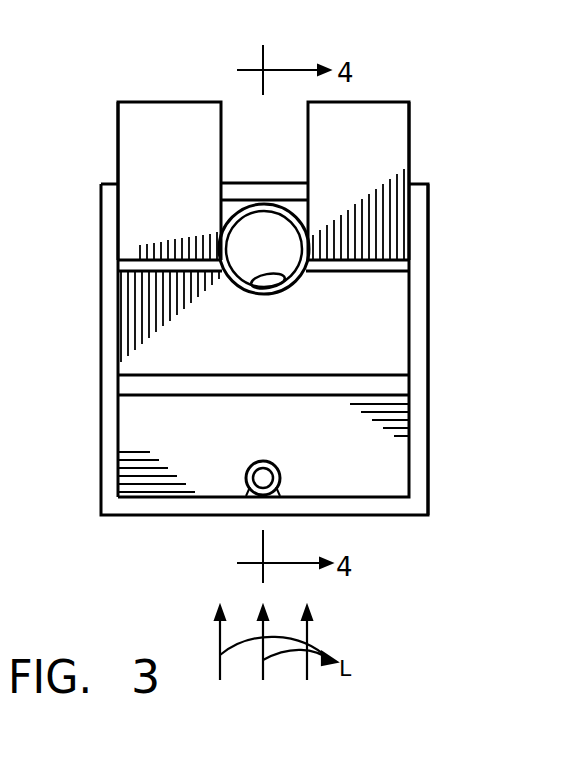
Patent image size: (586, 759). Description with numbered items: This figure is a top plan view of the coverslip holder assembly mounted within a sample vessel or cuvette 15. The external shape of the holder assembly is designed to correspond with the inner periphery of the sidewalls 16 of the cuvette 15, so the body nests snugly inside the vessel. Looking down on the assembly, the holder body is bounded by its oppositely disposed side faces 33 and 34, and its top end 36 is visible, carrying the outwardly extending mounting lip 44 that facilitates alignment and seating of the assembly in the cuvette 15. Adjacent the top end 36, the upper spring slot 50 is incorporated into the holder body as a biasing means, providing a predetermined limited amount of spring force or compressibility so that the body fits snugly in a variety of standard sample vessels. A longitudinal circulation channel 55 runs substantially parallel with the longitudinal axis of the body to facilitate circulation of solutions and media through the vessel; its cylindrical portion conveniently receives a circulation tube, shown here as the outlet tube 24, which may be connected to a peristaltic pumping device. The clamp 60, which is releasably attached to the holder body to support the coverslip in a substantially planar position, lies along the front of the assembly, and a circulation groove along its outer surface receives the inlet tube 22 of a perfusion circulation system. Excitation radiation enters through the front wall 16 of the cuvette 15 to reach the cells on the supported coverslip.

The cuvette 15 is at (438, 250).
The sidewall 16 is at (420, 305).
The inlet tube 22 is at (280, 468).
The outlet tube 24 is at (262, 204).
The side face 33 is at (118, 348).
The side face 34 is at (410, 357).
The top end 36 is at (248, 354).
The mounting lip 44 is at (133, 106).
The upper spring slot 50 is at (160, 262).
The circulation channel 55 is at (285, 291).
The clamp 60 is at (192, 500).